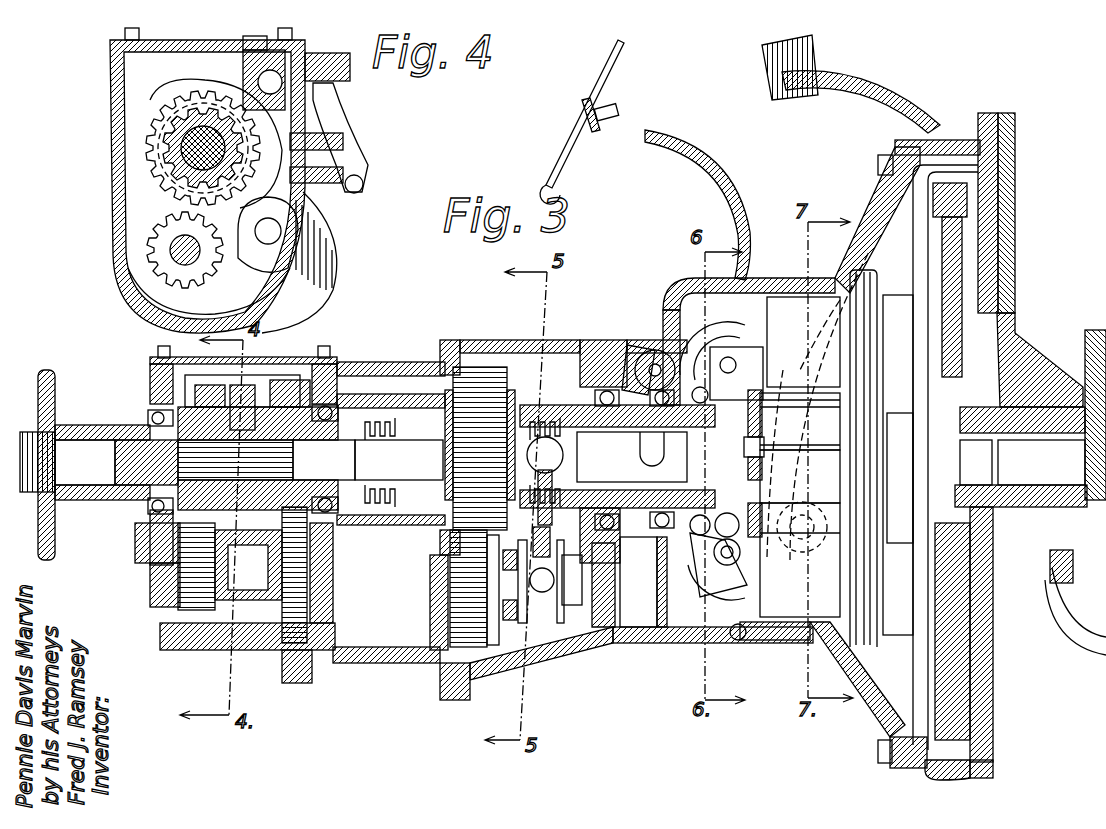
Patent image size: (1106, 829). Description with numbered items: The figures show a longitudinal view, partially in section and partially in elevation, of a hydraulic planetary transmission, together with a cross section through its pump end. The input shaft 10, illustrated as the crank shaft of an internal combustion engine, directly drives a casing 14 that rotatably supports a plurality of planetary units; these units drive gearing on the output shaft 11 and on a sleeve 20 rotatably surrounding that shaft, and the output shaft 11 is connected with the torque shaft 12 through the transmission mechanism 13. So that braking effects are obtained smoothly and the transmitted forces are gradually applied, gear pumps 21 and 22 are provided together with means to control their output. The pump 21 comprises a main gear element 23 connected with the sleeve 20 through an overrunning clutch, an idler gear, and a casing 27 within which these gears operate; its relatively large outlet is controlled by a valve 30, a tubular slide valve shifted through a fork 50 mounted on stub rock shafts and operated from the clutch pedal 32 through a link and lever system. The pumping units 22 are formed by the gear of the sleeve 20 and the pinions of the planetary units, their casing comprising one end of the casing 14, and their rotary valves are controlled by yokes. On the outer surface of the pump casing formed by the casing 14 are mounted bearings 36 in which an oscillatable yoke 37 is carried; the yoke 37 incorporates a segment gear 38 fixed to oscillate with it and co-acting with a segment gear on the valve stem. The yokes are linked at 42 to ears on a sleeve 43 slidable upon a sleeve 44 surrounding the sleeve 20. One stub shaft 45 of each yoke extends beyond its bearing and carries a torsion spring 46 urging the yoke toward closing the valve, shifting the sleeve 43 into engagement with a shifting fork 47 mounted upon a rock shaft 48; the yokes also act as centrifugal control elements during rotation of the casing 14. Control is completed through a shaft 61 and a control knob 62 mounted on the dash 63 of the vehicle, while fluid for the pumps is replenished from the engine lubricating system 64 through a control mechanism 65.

In FIG. 3, the input shaft 10 is at (1025, 400).
In FIG. 3, the output shaft 11 is at (402, 474).
In FIG. 4, the torque shaft 12 is at (205, 150).
In FIG. 3, the torque shaft 12 is at (62, 445).
In FIG. 4, the transmission mechanism 13 is at (163, 82).
In FIG. 3, the transmission mechanism 13 is at (192, 605).
In FIG. 3, the casing 14 is at (815, 360).
In FIG. 3, the sleeve 20 is at (545, 448).
In FIG. 3, the gear pump 21 is at (470, 580).
In FIG. 3, the gear pump 22 is at (792, 605).
In FIG. 3, the main gear element 23 is at (483, 370).
In FIG. 3, the casing 27 is at (495, 630).
In FIG. 3, the valve 30 is at (562, 625).
In FIG. 3, the clutch pedal 32 is at (860, 68).
In FIG. 3, the bearings 36 is at (728, 345).
In FIG. 3, the yoke 37 is at (700, 340).
In FIG. 3, the segment gear 38 is at (705, 558).
In FIG. 3, the link 42 is at (752, 512).
In FIG. 3, the sleeve 43 is at (748, 418).
In FIG. 3, the sleeve 44 is at (744, 472).
In FIG. 3, the stub shaft 45 is at (720, 560).
In FIG. 3, the torsion spring 46 is at (727, 566).
In FIG. 3, the shifting fork 47 is at (663, 453).
In FIG. 3, the rock shaft 48 is at (652, 350).
In FIG. 3, the fork 50 is at (543, 592).
In FIG. 4, the shaft 61 is at (335, 72).
In FIG. 3, the shaft 61 is at (700, 150).
In FIG. 3, the control knob 62 is at (580, 115).
In FIG. 3, the dash 63 is at (640, 78).
In FIG. 3, the lubricating system 64 is at (1059, 472).
In FIG. 3, the control mechanism 65 is at (985, 472).